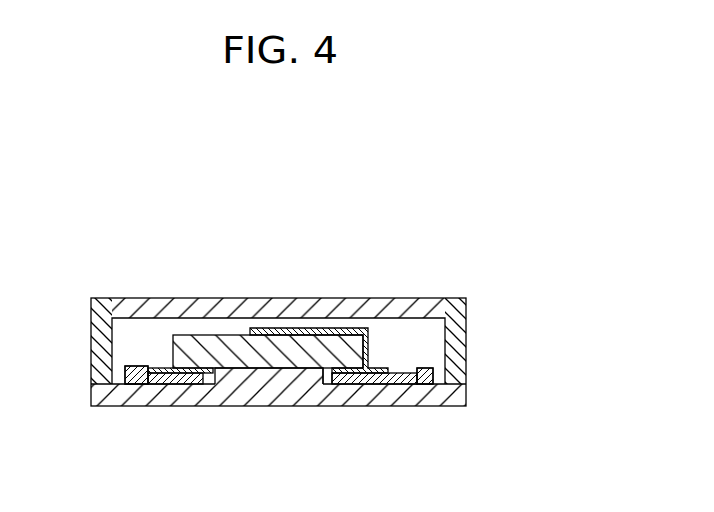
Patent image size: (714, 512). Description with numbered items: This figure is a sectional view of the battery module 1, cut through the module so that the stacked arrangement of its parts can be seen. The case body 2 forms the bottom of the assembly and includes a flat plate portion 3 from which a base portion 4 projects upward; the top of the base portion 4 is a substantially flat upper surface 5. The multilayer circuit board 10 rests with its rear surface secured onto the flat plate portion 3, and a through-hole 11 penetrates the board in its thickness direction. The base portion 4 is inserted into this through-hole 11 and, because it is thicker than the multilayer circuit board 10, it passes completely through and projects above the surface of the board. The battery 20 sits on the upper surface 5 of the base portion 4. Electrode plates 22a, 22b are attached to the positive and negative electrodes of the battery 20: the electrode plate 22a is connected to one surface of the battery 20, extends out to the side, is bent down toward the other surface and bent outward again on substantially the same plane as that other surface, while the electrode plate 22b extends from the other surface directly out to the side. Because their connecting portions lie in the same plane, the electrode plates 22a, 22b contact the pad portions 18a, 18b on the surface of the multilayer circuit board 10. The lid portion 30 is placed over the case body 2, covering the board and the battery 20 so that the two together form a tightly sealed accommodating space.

The battery module 1 is at (127, 222).
The case body 2 is at (467, 396).
The flat plate portion 3 is at (150, 388).
The base portion 4 is at (273, 380).
The upper surface 5 is at (247, 362).
The multilayer circuit board 10 is at (132, 371).
The through-hole 11 is at (326, 376).
The pad portion 18a is at (378, 378).
The pad portion 18b is at (182, 386).
The battery 20 is at (332, 348).
The electrode plate 22a is at (288, 332).
The electrode plate 22b is at (165, 368).
The lid portion 30 is at (176, 306).